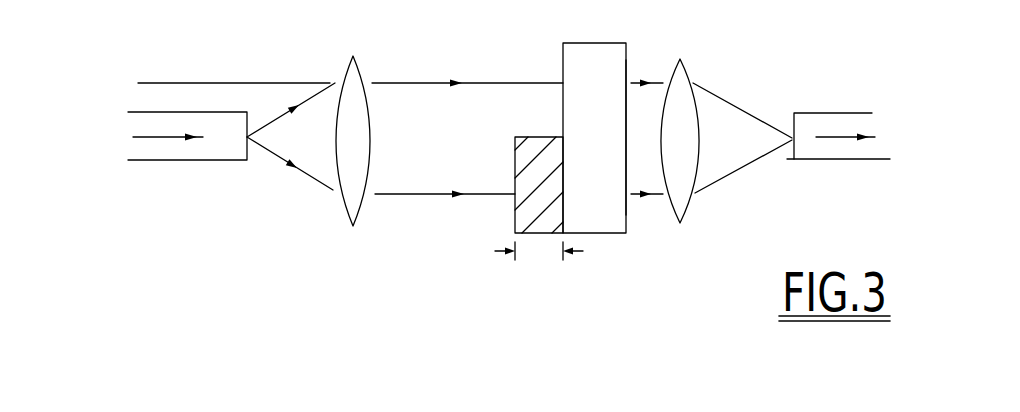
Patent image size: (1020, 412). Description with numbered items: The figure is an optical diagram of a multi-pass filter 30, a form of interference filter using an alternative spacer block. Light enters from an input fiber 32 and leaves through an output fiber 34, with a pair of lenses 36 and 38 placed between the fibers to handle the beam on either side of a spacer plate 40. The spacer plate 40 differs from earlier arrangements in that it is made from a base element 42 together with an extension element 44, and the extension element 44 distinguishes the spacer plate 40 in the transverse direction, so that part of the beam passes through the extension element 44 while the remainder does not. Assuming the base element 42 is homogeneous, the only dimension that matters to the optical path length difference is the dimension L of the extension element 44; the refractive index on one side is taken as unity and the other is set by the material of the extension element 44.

The multi-pass filter 30 is at (318, 35).
The input fiber 32 is at (201, 112).
The output fiber 34 is at (822, 112).
The lens 36 is at (355, 208).
The lens 38 is at (683, 210).
The spacer plate 40 is at (591, 33).
The base element 42 is at (613, 127).
The extension element 44 is at (515, 157).